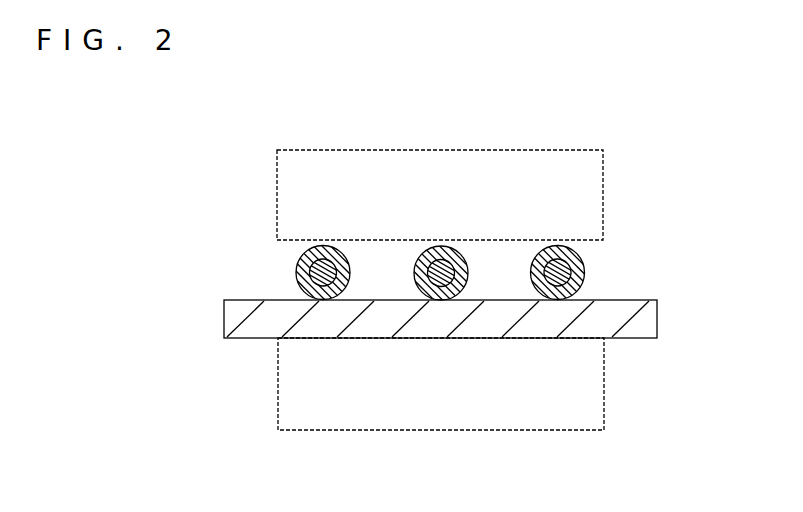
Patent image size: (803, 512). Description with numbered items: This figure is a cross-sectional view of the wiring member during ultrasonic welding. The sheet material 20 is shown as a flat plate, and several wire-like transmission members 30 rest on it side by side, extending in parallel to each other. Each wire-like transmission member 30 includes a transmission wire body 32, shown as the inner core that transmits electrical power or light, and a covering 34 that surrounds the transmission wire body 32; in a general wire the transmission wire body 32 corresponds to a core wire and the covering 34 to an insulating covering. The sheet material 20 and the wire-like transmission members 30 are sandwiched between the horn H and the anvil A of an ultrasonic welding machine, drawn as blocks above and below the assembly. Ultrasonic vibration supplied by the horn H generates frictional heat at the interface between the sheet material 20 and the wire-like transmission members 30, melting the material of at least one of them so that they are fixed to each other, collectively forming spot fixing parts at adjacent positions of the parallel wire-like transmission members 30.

The anvil A is at (585, 195).
The horn H is at (587, 385).
The sheet material 20 is at (650, 315).
The wire-like transmission member 30 is at (468, 270).
The transmission wire body 32 is at (576, 255).
The covering 34 is at (572, 279).